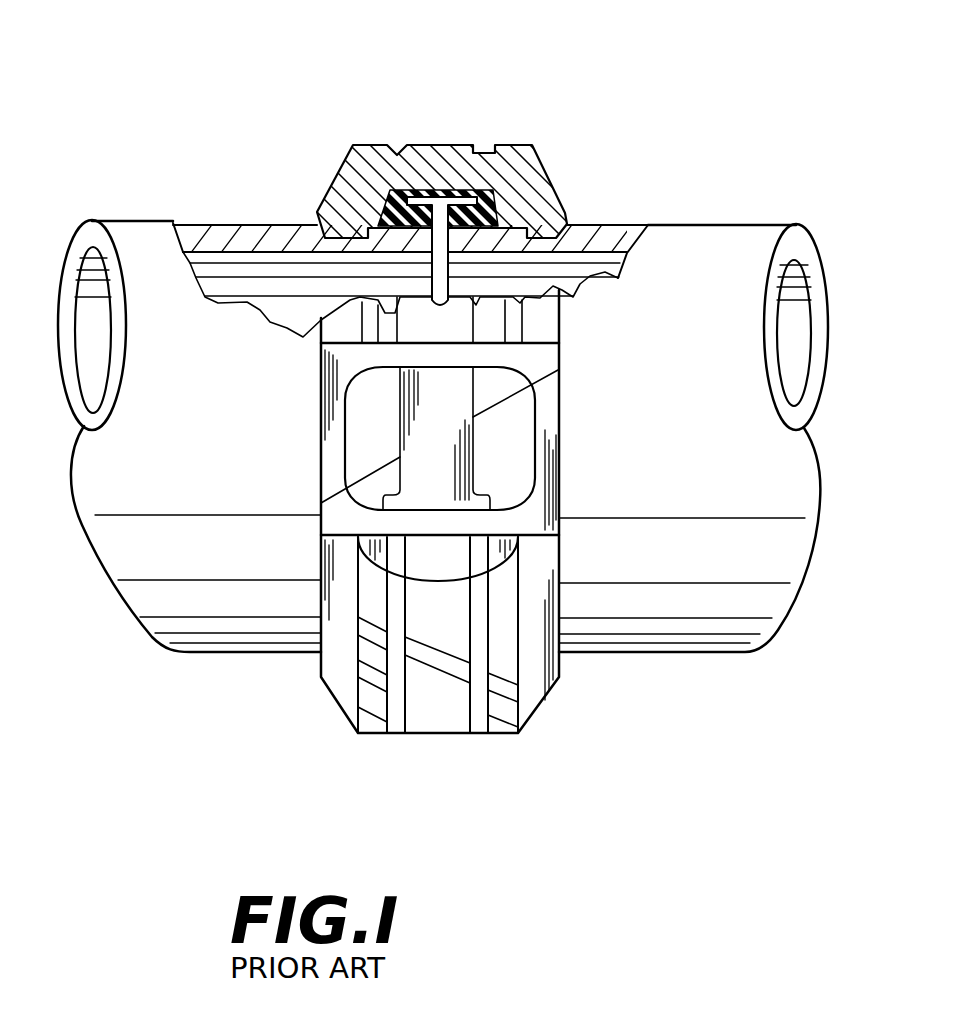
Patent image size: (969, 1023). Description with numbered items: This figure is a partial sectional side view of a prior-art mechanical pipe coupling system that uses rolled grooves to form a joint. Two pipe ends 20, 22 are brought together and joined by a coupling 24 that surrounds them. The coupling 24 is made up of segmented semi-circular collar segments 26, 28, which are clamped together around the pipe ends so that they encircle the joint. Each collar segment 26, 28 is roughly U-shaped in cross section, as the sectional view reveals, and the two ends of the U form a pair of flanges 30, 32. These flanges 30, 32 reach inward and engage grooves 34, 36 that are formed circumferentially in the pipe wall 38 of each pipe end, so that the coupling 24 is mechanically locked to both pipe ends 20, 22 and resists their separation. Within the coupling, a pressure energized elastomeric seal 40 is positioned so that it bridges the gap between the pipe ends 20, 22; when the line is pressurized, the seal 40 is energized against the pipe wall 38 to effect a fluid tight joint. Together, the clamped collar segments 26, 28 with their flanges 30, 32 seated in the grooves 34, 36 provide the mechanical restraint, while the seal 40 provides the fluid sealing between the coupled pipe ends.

The pipe end 20 is at (195, 223).
The pipe end 22 is at (703, 225).
The coupling 24 is at (520, 145).
The collar segment 26 is at (365, 158).
The collar segment 28 is at (532, 687).
The flange 30 is at (327, 222).
The flange 32 is at (538, 207).
The groove 34 is at (335, 277).
The groove 36 is at (573, 297).
The pipe wall 38 is at (223, 223).
The pressure energized elastomeric seal 40 is at (453, 192).